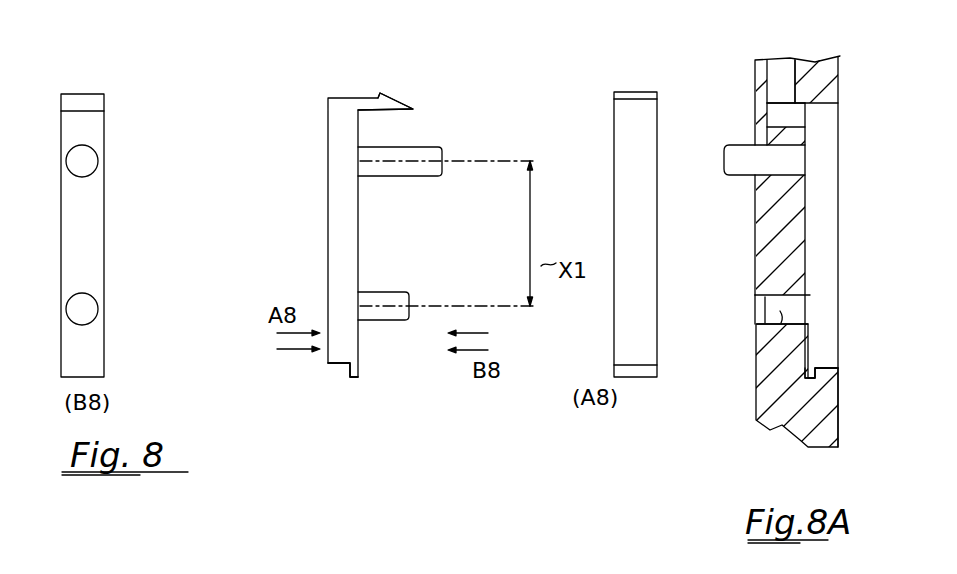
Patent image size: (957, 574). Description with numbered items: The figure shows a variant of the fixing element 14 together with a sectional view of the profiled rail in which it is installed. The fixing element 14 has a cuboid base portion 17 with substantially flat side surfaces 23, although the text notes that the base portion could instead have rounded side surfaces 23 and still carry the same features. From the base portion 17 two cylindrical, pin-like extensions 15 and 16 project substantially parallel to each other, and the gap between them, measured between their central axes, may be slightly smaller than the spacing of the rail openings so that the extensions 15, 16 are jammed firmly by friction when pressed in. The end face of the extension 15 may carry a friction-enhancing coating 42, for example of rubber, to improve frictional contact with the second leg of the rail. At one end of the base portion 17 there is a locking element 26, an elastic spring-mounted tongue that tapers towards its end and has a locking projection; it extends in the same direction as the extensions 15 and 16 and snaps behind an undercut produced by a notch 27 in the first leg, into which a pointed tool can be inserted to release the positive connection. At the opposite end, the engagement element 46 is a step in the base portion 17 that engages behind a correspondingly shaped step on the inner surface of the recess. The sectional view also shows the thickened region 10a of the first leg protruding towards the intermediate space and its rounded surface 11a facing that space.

In FIG. 8, the fixing element 14 is at (395, 242).
In FIG. 8A, the fixing element 14 is at (800, 252).
In FIG. 8, the base portion 17 is at (88, 252).
In FIG. 8A, the base portion 17 is at (827, 230).
In FIG. 8, the locking element 26 is at (79, 94).
In FIG. 8A, the locking element 26 is at (776, 108).
In FIG. 8, the side surfaces 23 is at (340, 95).
In FIG. 8, the extension 15 is at (97, 160).
In FIG. 8A, the extension 15 is at (742, 165).
In FIG. 8, the extension 16 is at (97, 312).
In FIG. 8A, the extension 16 is at (757, 350).
In FIG. 8, the friction-enhancing coating 42 is at (448, 160).
In FIG. 8, the engagement element 46 is at (338, 380).
In FIG. 8A, the engagement element 46 is at (810, 378).
In FIG. 8A, the notch 27 is at (795, 72).
In FIG. 8A, the surface 11a is at (757, 258).
In FIG. 8A, the region 10a is at (797, 412).